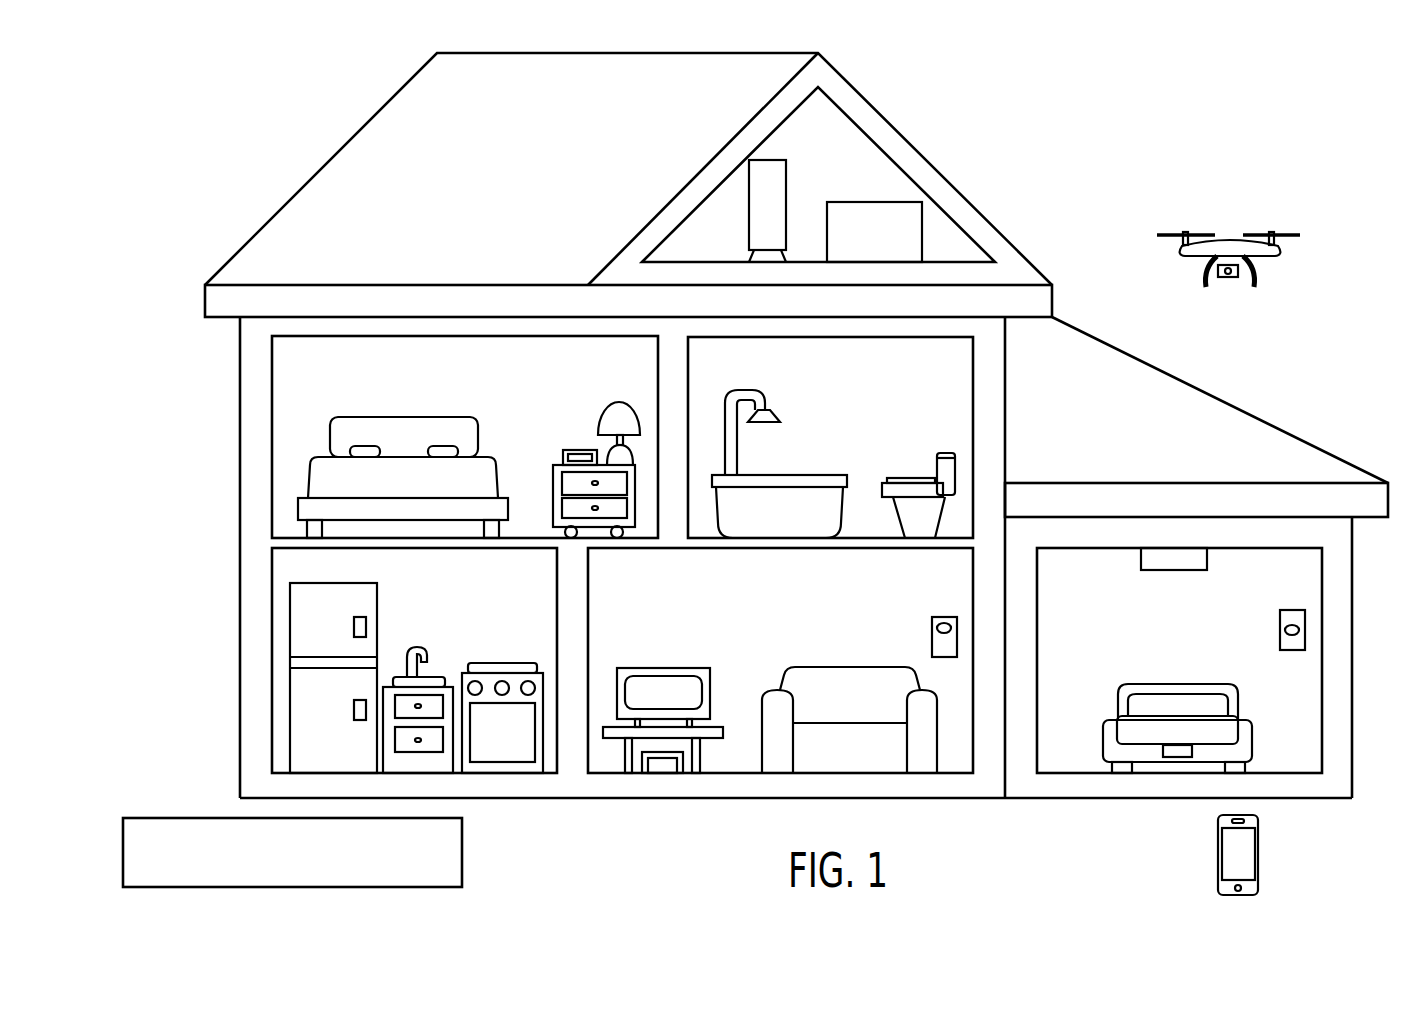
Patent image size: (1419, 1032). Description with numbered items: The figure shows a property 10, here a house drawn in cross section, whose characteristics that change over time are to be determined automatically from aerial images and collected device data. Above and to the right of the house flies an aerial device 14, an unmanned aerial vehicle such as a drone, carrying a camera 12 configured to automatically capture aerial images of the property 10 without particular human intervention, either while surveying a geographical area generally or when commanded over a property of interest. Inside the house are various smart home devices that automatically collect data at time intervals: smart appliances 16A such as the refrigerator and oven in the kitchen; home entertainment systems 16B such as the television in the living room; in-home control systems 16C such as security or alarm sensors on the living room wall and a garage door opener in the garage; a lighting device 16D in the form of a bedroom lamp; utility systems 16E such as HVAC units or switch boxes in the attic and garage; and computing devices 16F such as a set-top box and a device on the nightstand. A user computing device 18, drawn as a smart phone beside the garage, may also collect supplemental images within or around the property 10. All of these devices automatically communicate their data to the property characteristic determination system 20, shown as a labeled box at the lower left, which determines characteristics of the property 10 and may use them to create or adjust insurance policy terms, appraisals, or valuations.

The property 10 is at (1044, 160).
The camera 12 is at (1228, 278).
The aerial device 14 is at (1228, 263).
The smart appliances 16A is at (388, 617).
The home entertainment systems 16B is at (690, 633).
The in-home control systems 16C is at (920, 605).
The lighting devices 16D is at (602, 395).
The utility systems 16E is at (842, 192).
The computing devices 16F is at (568, 440).
The user computing device 18 is at (1230, 845).
The property characteristic determination system 20 is at (123, 852).